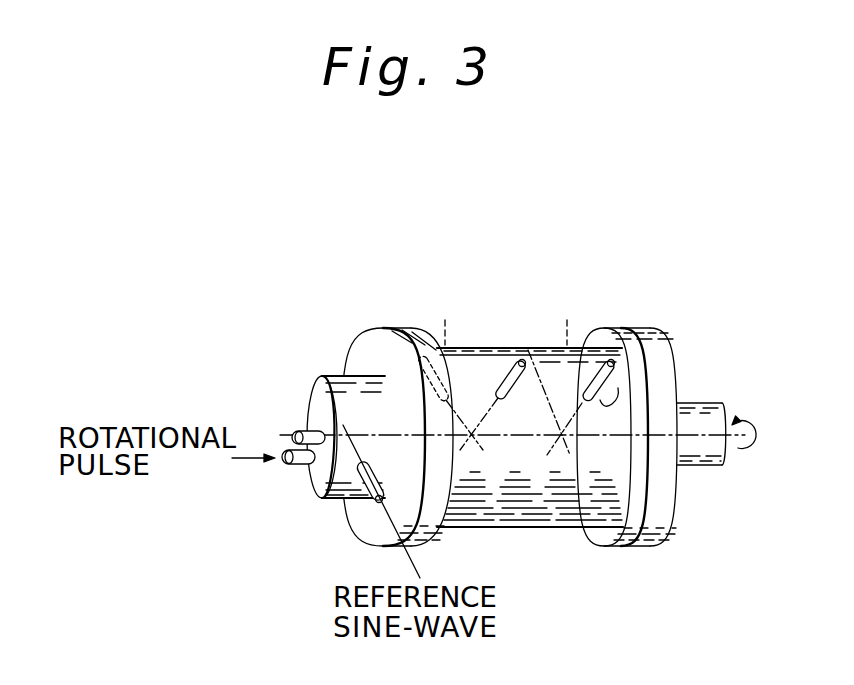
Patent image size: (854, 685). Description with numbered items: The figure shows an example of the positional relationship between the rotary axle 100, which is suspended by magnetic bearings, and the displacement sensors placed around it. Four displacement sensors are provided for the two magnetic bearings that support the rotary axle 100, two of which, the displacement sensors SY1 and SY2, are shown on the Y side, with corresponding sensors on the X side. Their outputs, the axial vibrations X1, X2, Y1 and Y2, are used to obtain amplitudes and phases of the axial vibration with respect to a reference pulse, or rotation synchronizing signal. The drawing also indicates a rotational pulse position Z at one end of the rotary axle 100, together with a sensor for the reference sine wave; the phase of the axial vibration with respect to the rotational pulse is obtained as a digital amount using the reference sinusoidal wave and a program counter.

The rotary axle 100 is at (556, 530).
The rotational pulse sensor Z is at (292, 430).
The displacement sensor output x1 X1 is at (522, 360).
The displacement sensor output x2 X2 is at (413, 343).
The displacement sensor output y1 Y1 is at (612, 358).
The displacement sensor output y2 Y2 is at (528, 348).
The displacement sensor SY1 is at (607, 403).
The displacement sensor SY2 is at (532, 409).